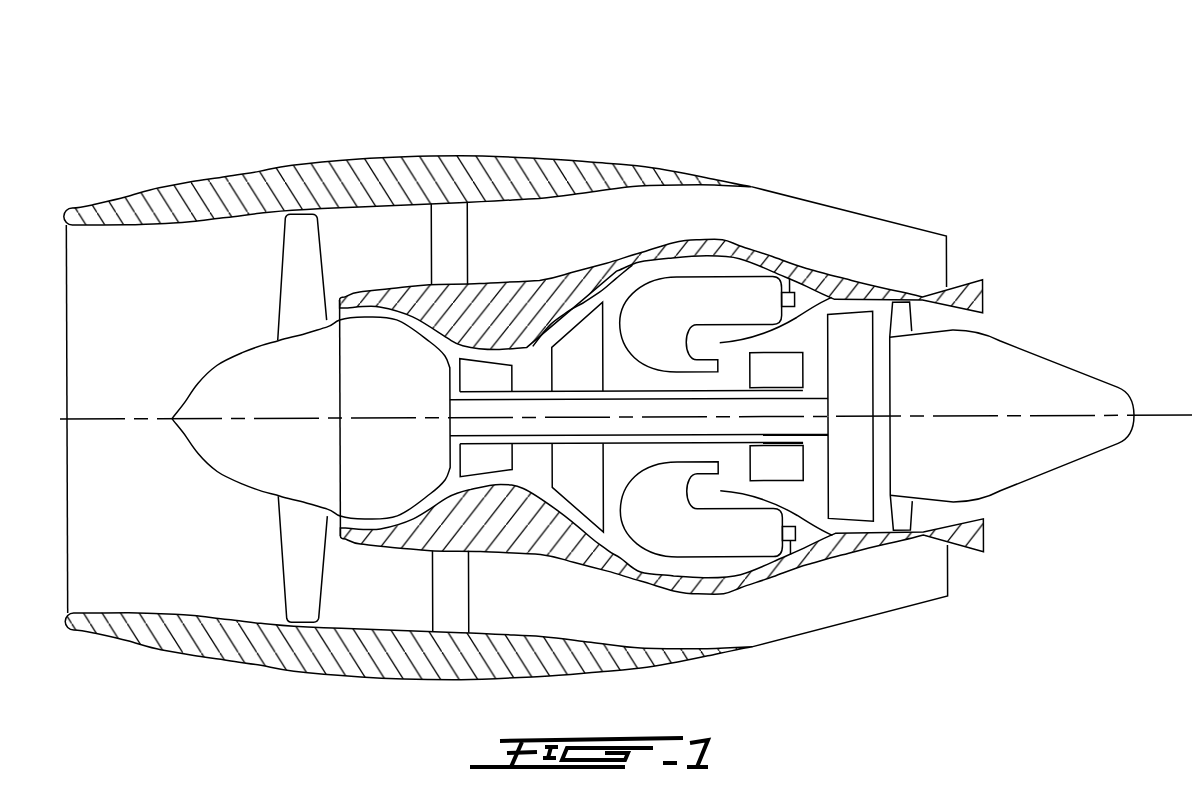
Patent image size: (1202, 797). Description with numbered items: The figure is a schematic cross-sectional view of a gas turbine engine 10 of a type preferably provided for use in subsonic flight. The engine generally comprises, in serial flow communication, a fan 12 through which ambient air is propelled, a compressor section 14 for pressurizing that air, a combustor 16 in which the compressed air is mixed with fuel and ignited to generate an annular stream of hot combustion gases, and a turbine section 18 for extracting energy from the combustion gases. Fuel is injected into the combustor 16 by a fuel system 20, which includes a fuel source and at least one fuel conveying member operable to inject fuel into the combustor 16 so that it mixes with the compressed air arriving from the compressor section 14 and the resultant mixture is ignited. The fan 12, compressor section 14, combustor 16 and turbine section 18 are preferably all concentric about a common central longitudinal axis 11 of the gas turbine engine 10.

The gas turbine engine 10 is at (798, 139).
The central longitudinal axis 11 is at (1172, 416).
The fan 12 is at (300, 552).
The compressor section 14 is at (530, 367).
The combustor 16 is at (697, 277).
The turbine section 18 is at (813, 337).
The fuel system 20 is at (803, 271).